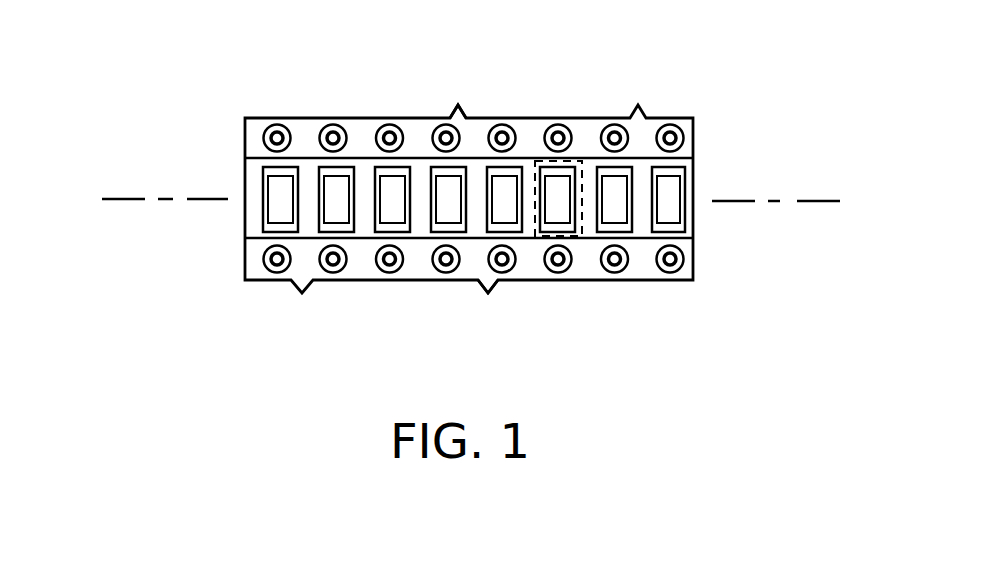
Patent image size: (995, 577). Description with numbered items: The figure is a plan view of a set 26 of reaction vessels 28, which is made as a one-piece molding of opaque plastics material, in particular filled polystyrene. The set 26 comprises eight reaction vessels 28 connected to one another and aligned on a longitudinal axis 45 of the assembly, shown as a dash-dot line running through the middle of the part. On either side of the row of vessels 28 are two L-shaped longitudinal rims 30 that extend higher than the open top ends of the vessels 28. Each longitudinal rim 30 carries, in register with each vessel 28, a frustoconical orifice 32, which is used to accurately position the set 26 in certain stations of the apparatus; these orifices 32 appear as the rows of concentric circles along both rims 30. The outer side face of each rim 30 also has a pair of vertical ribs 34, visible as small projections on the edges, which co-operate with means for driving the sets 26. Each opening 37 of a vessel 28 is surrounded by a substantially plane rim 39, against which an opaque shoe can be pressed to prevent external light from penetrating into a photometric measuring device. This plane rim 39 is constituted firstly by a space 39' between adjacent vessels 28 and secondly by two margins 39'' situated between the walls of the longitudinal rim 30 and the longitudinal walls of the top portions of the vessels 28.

The set of reaction vessels 26 is at (648, 81).
The reaction vessel 28 is at (404, 218).
The longitudinal rim 30 is at (540, 118).
The frustoconical orifice 32 is at (278, 272).
The vertical rib 34 is at (459, 106).
The opening 37 is at (667, 210).
The plane rim 39 is at (571, 250).
The space between vessels 39' is at (377, 264).
The margin 39'' is at (580, 112).
The longitudinal axis 45 is at (113, 200).